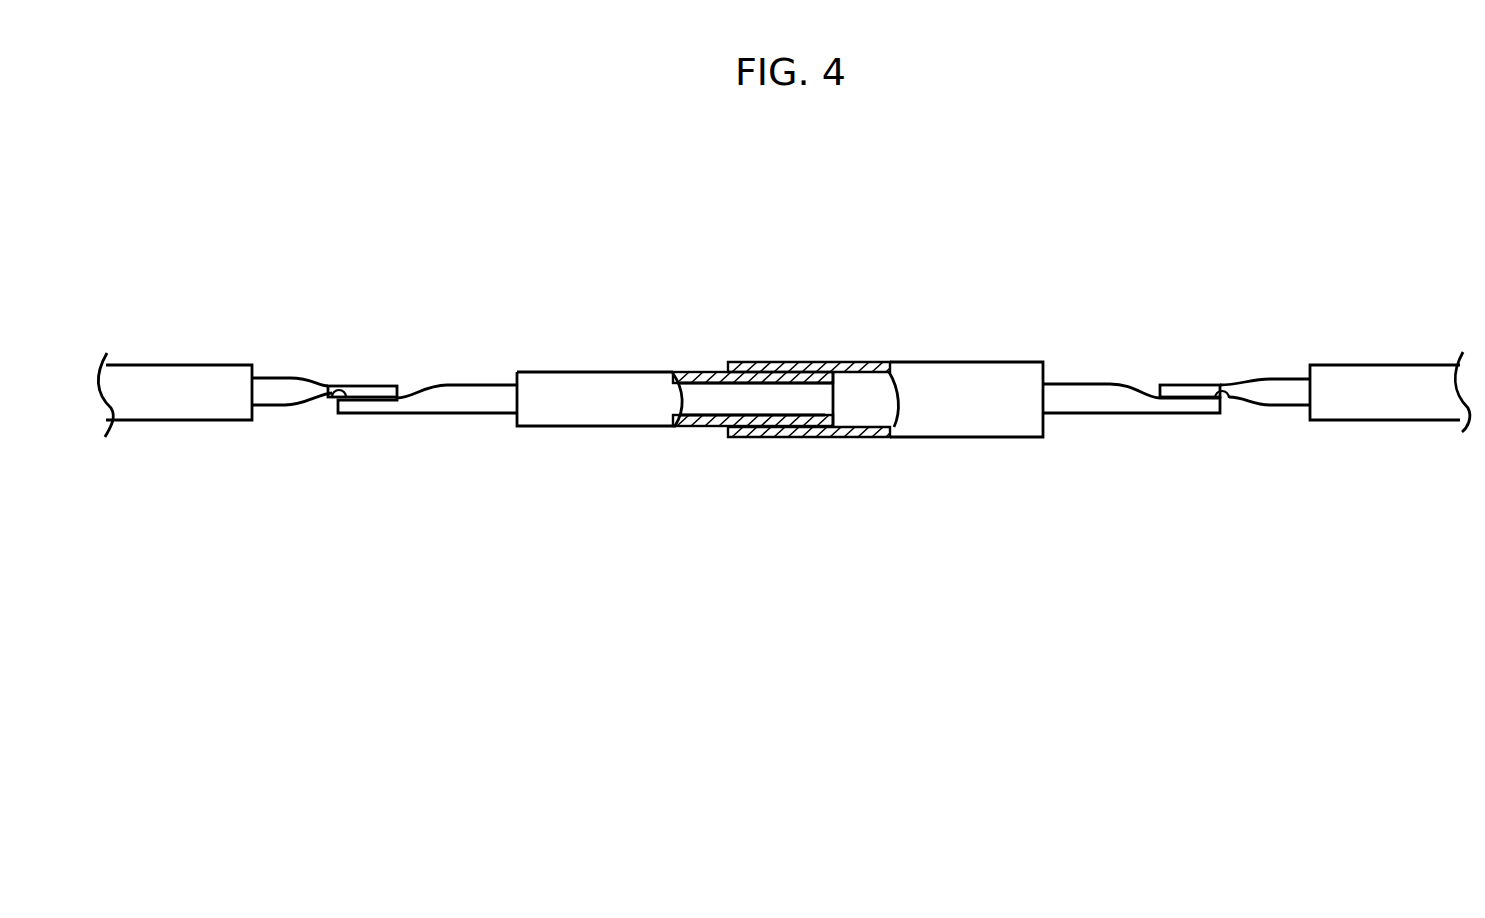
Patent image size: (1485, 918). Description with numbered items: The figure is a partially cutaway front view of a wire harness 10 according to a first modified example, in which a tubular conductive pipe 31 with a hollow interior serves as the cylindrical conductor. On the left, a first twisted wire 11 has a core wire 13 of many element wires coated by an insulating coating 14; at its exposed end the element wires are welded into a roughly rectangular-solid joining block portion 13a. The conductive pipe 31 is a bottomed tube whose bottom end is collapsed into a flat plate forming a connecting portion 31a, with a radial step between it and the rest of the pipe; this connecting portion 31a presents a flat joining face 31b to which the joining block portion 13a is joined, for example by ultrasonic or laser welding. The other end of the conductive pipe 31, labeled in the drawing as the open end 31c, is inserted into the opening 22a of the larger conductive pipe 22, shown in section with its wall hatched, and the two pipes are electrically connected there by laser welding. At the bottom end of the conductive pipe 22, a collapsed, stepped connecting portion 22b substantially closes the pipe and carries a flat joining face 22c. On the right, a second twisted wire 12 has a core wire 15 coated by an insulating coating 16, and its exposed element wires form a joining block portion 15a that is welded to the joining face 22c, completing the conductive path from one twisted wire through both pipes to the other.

The wire harness 10 is at (302, 122).
The first twisted wire 11 is at (200, 365).
The second twisted wire 12 is at (1408, 365).
The core wire 13 is at (288, 378).
The joining block portion 13a is at (362, 386).
The insulating coating 14 is at (203, 405).
The core wire 15 is at (1293, 379).
The joining block portion 15a is at (1196, 385).
The insulating coating 16 is at (1408, 405).
The conductive pipe 22 is at (970, 423).
The opening 22a is at (733, 383).
The connecting portion 22b is at (1142, 403).
The joining face 22c is at (1227, 400).
The conductive pipe 31 is at (622, 416).
The connecting portion 31a is at (470, 405).
The joining face 31b is at (333, 400).
The second lead of resistor 31c is at (838, 414).